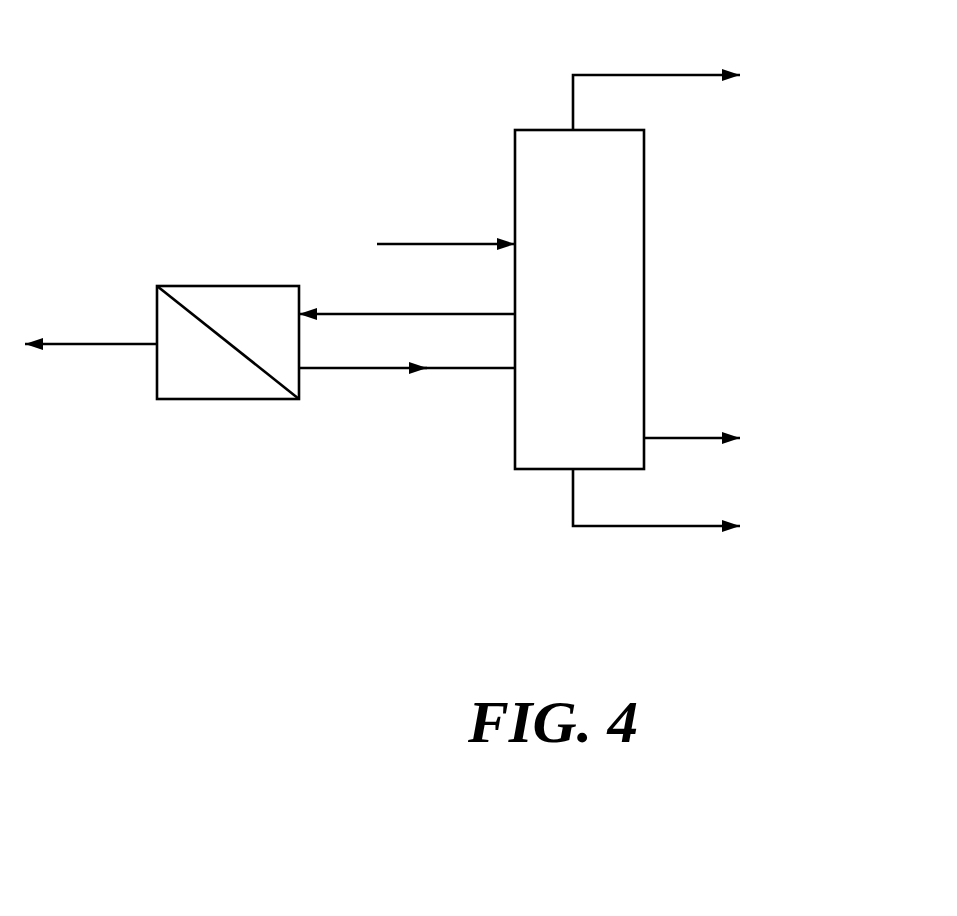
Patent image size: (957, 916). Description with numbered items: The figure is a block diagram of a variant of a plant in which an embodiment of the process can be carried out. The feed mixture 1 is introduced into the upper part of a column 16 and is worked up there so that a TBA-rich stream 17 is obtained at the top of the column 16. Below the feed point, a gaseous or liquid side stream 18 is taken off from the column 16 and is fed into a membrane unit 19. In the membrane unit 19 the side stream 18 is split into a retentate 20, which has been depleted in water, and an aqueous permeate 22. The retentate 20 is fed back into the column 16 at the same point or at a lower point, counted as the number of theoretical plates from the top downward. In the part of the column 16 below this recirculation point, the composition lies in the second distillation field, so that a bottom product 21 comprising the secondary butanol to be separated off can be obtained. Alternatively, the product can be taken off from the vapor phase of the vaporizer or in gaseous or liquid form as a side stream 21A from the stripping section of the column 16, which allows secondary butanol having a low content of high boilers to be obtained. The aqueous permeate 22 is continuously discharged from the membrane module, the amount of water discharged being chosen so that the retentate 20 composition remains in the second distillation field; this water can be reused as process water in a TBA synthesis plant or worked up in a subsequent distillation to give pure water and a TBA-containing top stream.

The feed mixture 1 is at (430, 233).
The column 16 is at (579, 299).
The TBA-rich stream 17 is at (697, 83).
The side stream 18 is at (407, 285).
The membrane unit 19 is at (228, 342).
The retentate 20 is at (407, 397).
The bottom product 21 is at (712, 502).
The side stream 21A is at (750, 428).
The aqueous permeate 22 is at (91, 383).